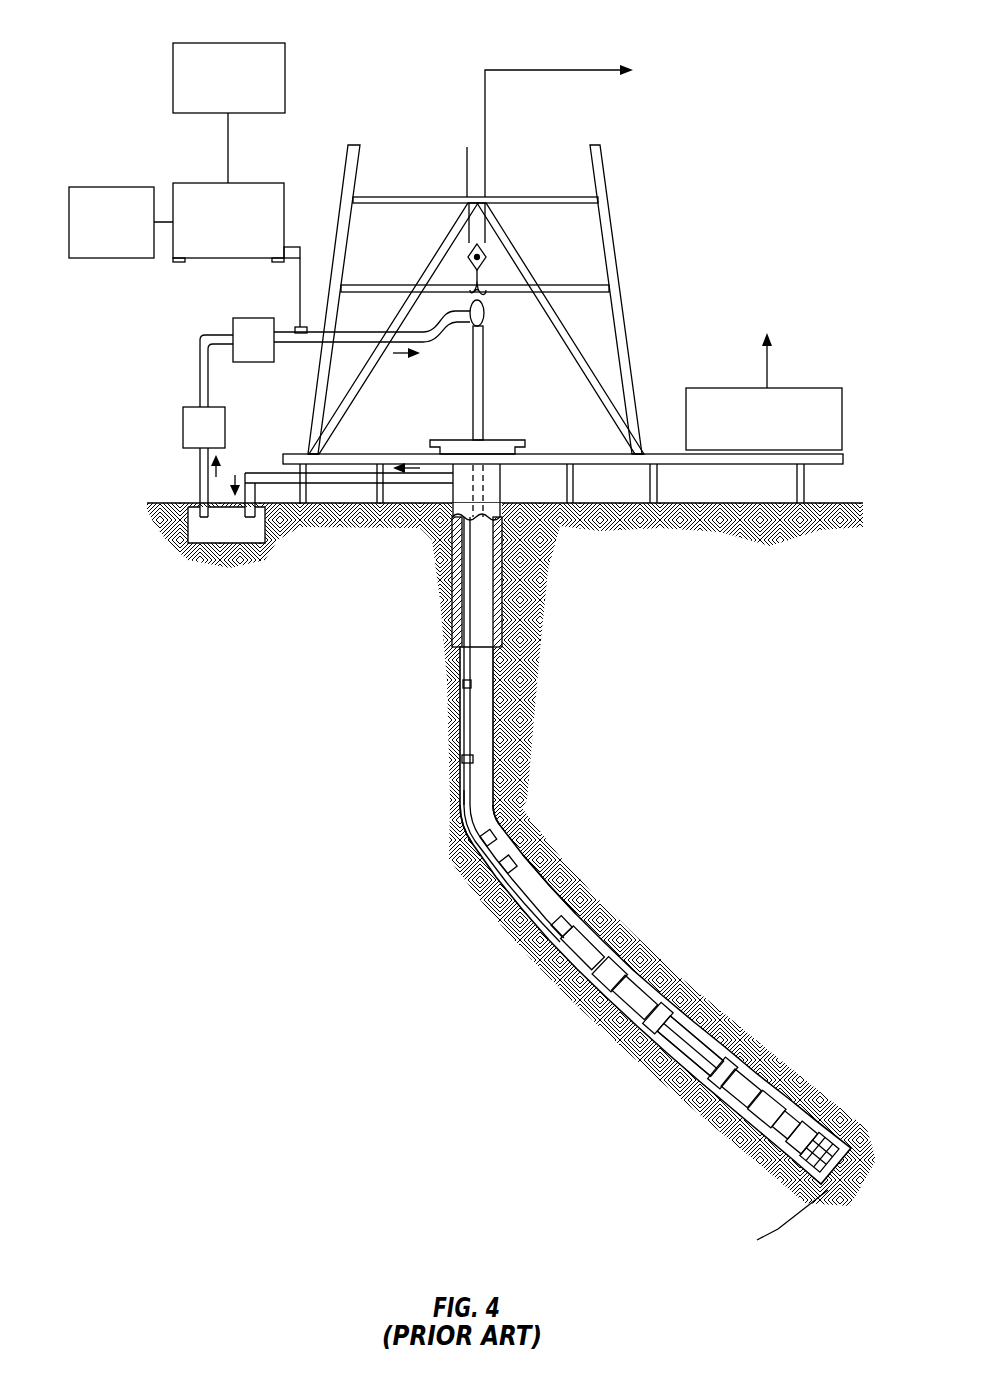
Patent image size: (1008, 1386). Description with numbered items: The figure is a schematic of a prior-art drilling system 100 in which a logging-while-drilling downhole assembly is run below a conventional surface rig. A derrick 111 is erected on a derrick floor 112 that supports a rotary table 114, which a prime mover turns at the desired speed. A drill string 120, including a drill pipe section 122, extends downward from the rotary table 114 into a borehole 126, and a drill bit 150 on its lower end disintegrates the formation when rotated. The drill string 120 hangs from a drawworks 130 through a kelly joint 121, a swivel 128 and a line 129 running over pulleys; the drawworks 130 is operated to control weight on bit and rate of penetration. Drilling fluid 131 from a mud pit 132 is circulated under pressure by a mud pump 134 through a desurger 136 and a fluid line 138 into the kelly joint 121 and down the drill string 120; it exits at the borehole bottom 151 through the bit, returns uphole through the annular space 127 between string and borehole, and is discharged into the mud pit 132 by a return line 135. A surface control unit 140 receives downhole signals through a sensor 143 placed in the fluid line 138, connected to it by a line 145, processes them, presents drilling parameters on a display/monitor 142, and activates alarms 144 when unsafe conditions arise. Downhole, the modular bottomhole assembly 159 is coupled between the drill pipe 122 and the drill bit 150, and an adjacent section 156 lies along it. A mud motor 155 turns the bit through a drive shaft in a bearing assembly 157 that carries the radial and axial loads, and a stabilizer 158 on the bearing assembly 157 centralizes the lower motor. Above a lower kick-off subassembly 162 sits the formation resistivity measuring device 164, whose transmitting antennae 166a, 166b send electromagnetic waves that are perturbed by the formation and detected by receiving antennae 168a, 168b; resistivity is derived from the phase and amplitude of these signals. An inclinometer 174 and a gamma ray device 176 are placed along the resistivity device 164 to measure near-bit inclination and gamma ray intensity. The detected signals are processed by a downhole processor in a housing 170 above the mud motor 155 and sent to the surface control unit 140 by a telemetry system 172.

The drilling system 100 is at (124, 38).
The derrick 111 is at (622, 292).
The derrick floor 112 is at (651, 454).
The rotary table 114 is at (507, 440).
The drill string 120 is at (503, 718).
The kelly joint 121 is at (484, 370).
The drill pipe section 122 is at (468, 718).
The borehole 126 is at (498, 815).
The annular space 127 is at (513, 843).
The swivel 128 is at (482, 316).
The line 129 is at (485, 172).
The drawworks 130 is at (810, 388).
The drilling fluid 131 is at (197, 546).
The mud pit 132 is at (228, 552).
The mud pump 134 is at (193, 412).
The return line 135 is at (328, 485).
The desurger 136 is at (247, 318).
The fluid line 138 is at (318, 346).
The surface control unit 140 is at (190, 183).
The display/monitor 142 is at (265, 43).
The sensor 143 is at (300, 327).
The alarms 144 is at (107, 258).
The signal line 145 is at (295, 247).
The drill bit 150 is at (833, 1138).
The borehole bottom 151 is at (778, 1229).
The mud motor 155 is at (563, 897).
The drill collar 156 is at (620, 927).
The bearing assembly 157 is at (753, 1138).
The stabilizer 158 is at (800, 1125).
The downhole subassembly 159 is at (645, 823).
The lower kick-off subassembly 162 is at (785, 1113).
The formation resistivity measuring device 164 is at (688, 1070).
The transmitting antenna 166a is at (600, 993).
The transmitting antenna 166b is at (710, 1093).
The receiving antenna 168a is at (683, 1057).
The receiving antenna 168b is at (715, 1062).
The housing 170 is at (472, 867).
The telemetry system 172 is at (475, 800).
The inclinometer 174 is at (735, 1078).
The gamma ray device 176 is at (762, 1098).